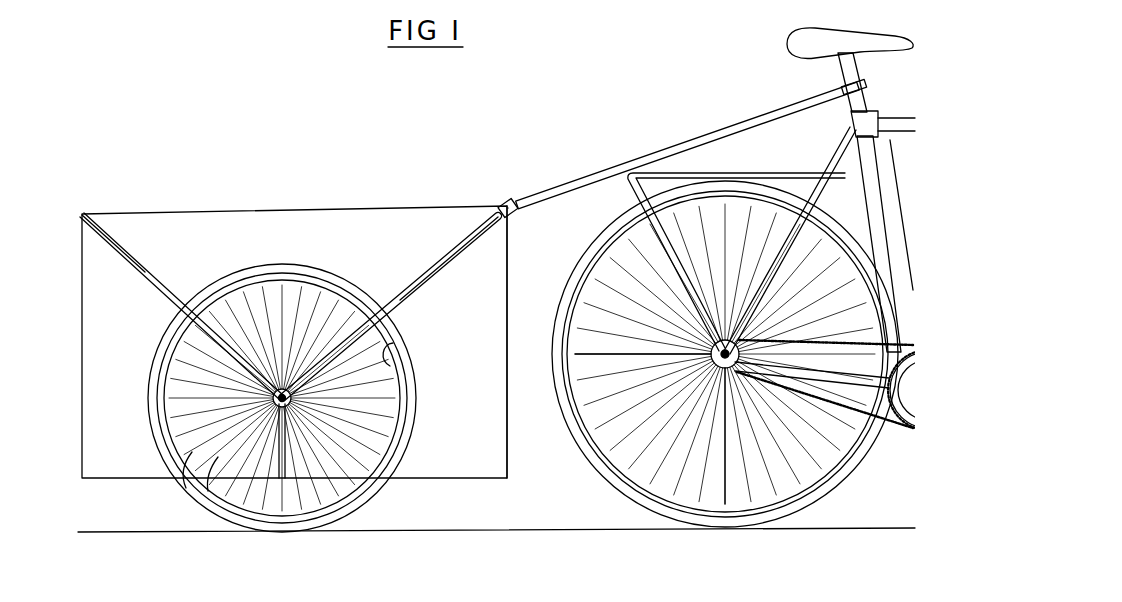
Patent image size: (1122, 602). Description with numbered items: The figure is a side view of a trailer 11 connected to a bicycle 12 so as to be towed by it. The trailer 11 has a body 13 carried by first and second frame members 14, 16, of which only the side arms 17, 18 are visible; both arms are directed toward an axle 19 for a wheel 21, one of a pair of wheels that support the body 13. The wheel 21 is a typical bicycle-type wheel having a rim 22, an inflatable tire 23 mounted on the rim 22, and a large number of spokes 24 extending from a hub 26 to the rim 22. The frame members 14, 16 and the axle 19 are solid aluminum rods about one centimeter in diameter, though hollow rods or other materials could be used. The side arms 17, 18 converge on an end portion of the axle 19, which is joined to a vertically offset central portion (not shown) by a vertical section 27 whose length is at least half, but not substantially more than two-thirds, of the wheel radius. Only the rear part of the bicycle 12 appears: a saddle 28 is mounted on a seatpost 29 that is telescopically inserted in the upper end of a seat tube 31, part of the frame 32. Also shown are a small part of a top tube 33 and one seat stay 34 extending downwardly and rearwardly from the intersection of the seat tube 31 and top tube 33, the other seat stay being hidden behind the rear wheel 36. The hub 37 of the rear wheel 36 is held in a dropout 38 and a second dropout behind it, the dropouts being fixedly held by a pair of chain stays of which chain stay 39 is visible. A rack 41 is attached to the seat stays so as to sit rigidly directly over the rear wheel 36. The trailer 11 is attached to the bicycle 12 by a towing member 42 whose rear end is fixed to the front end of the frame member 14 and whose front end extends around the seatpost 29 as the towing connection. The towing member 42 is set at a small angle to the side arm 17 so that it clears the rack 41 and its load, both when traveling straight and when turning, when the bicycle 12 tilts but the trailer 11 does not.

The trailer 11 is at (278, 211).
The bicycle 12 is at (613, 222).
The body 13 is at (508, 247).
The first frame member 14 is at (437, 266).
The second frame member 16 is at (110, 246).
The side arm 17 is at (444, 258).
The side arm 18 is at (143, 268).
The axle 19 is at (290, 404).
The wheel 21 is at (410, 390).
The rim 22 is at (396, 356).
The inflatable tire 23 is at (409, 441).
The spokes 24 is at (193, 455).
The hub 26 is at (273, 396).
The vertical section 27 is at (288, 463).
The saddle 28 is at (787, 40).
The seatpost 29 is at (838, 73).
The seat tube 31 is at (877, 155).
The frame 32 is at (840, 152).
The top tube 33 is at (888, 112).
The seat stay 34 is at (889, 183).
The rear wheel 36 is at (564, 297).
The hub 37 is at (708, 354).
The dropout 38 is at (708, 390).
The chain stay 39 is at (822, 372).
The rack 41 is at (701, 170).
The towing member 42 is at (548, 189).